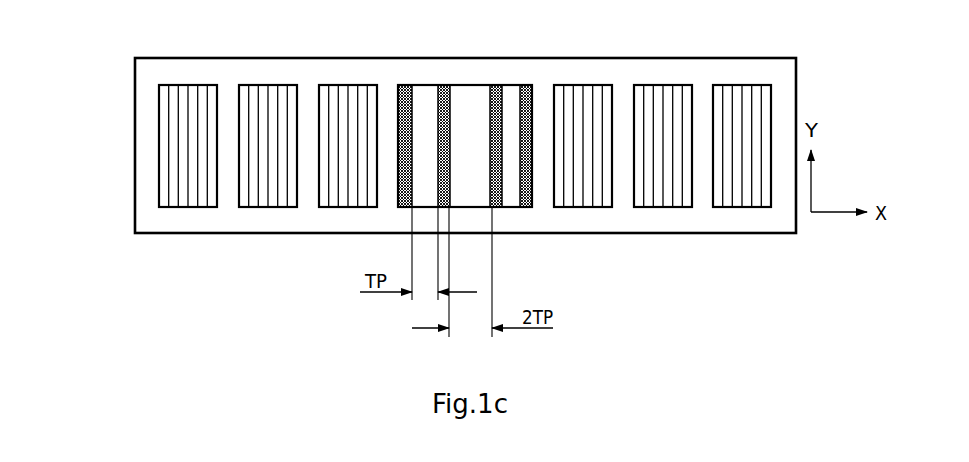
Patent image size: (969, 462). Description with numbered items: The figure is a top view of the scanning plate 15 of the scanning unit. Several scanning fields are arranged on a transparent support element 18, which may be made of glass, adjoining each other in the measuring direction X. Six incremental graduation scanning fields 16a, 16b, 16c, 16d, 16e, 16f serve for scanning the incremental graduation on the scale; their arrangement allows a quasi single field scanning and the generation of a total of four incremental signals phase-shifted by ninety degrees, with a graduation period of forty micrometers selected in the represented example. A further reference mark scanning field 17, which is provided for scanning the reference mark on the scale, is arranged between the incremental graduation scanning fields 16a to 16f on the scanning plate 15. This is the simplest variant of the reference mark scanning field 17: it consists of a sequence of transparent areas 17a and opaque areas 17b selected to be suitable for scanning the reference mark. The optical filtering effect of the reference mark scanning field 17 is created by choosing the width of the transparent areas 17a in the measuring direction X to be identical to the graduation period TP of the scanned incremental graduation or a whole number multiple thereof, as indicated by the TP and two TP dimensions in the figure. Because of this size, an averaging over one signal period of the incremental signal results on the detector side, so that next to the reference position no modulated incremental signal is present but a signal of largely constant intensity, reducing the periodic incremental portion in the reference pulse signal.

The scanning plate 15 is at (116, 156).
The incremental graduation scanning field 16a is at (180, 90).
The incremental graduation scanning field 16b is at (258, 90).
The incremental graduation scanning field 16c is at (338, 90).
The incremental graduation scanning field 16d is at (580, 90).
The incremental graduation scanning field 16e is at (660, 90).
The incremental graduation scanning field 16f is at (733, 90).
The reference mark scanning field 17 is at (465, 104).
The transparent areas 17a is at (422, 90).
The opaque areas 17b is at (442, 90).
The transparent support element 18 is at (145, 67).